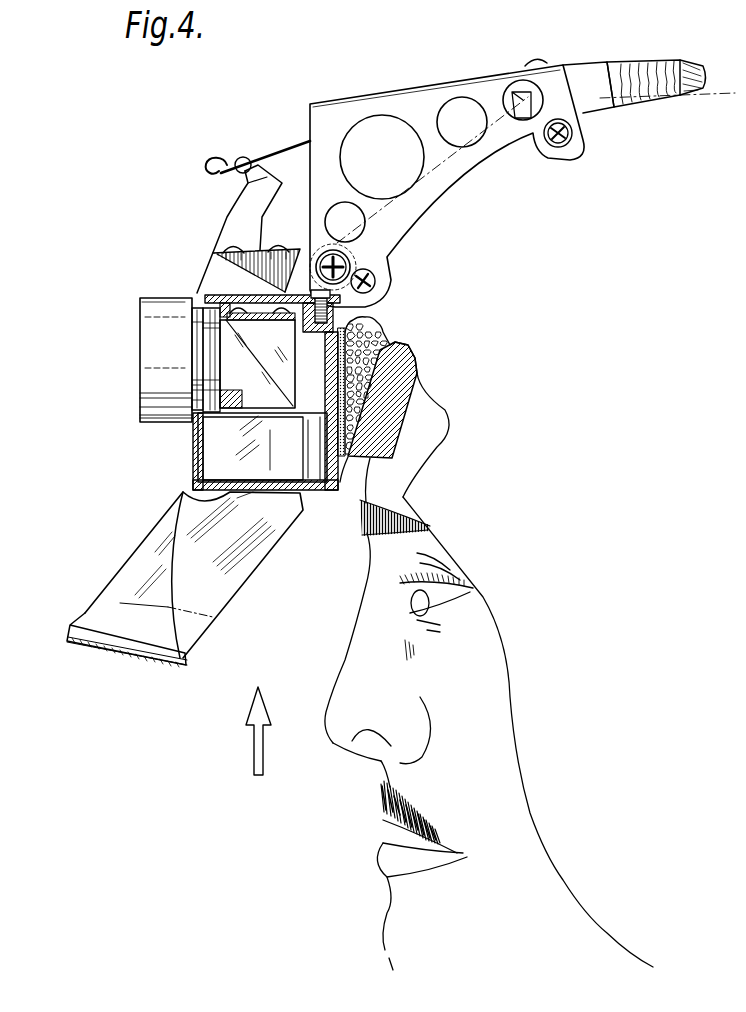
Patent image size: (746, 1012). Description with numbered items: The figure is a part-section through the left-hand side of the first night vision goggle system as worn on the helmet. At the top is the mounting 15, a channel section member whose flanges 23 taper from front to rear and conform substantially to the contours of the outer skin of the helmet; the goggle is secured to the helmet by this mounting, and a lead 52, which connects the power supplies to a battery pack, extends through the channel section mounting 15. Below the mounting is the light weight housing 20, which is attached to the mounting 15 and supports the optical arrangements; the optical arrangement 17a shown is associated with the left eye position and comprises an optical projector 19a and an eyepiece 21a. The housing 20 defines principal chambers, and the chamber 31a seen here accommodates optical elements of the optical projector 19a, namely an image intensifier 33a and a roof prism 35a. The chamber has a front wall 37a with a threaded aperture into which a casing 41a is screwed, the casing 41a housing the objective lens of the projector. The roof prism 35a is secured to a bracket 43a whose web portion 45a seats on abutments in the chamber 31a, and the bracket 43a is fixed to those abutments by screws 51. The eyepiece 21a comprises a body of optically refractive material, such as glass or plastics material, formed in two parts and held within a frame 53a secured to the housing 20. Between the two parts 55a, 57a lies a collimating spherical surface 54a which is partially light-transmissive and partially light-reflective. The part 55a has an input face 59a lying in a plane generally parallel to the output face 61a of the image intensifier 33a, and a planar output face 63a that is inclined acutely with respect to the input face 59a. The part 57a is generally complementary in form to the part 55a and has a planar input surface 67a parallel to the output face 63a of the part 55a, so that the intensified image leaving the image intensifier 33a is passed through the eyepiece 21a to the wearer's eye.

The mounting 15 is at (392, 255).
The optical arrangement 17a is at (158, 455).
The optical projector 19a is at (163, 433).
The housing 20 is at (307, 473).
The eyepiece 21a is at (84, 612).
The flanges 23 is at (490, 86).
The chamber 31a is at (307, 383).
The image intensifier 33a is at (326, 480).
The roof prism 35a is at (242, 368).
The front wall 37a is at (197, 296).
The casing 41a is at (140, 328).
The bracket 43a is at (300, 352).
The web portion 45a is at (250, 302).
The screws 51 is at (302, 290).
The lead 52 is at (697, 25).
The frame 53a is at (113, 652).
The collimating spherical surface 54a is at (168, 636).
The part of eyepiece 55a is at (228, 580).
The part of eyepiece 57a is at (130, 585).
The input face 59a is at (293, 498).
The output face 61a is at (190, 500).
The output face 63a is at (219, 615).
The input surface 67a is at (140, 550).